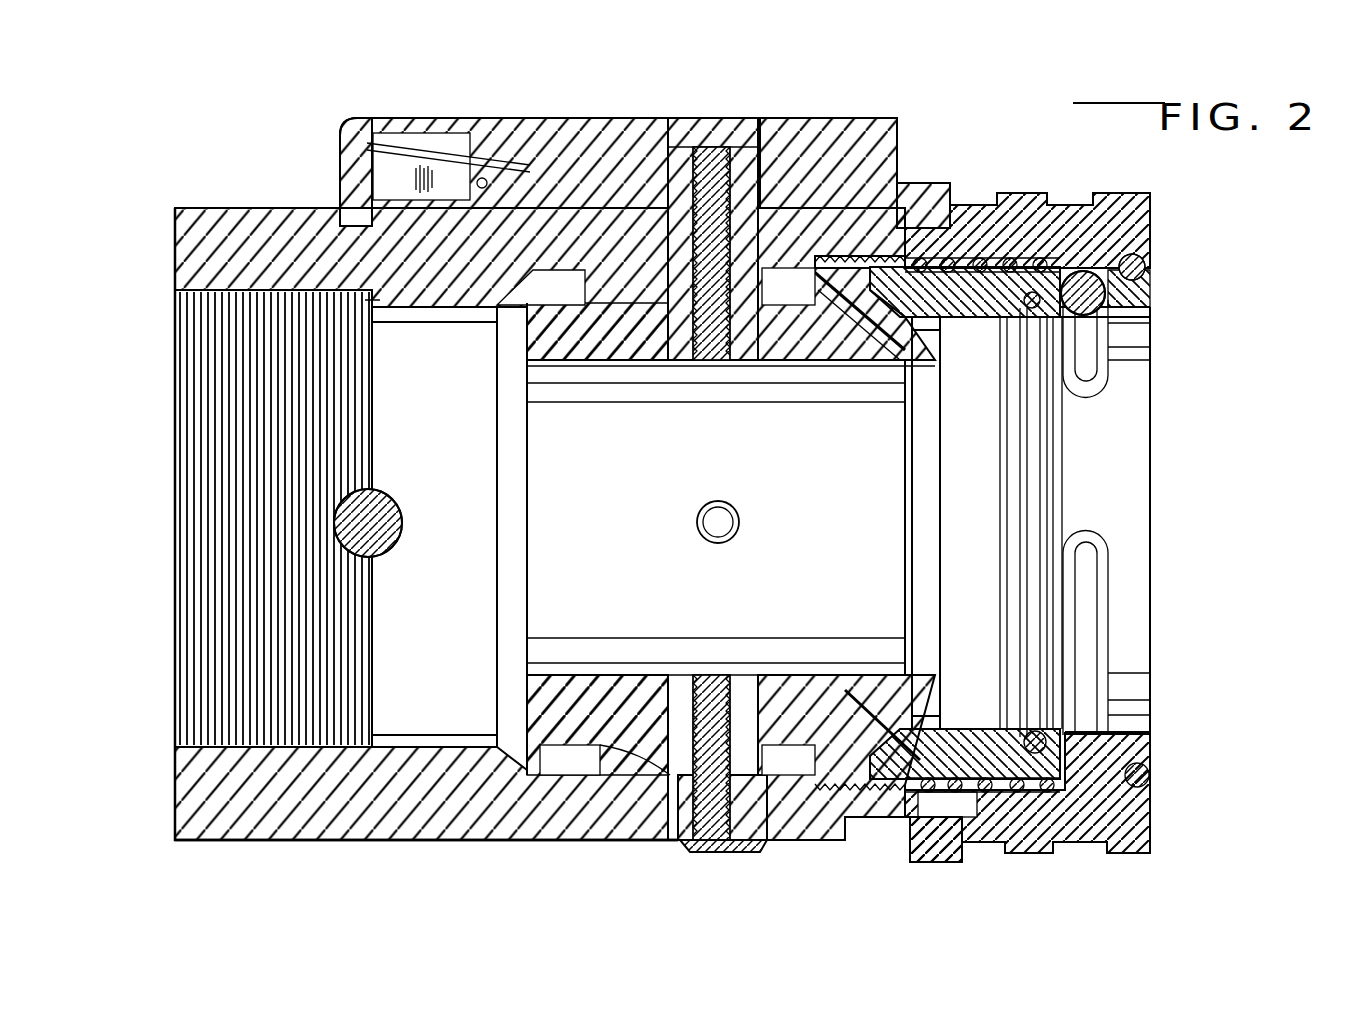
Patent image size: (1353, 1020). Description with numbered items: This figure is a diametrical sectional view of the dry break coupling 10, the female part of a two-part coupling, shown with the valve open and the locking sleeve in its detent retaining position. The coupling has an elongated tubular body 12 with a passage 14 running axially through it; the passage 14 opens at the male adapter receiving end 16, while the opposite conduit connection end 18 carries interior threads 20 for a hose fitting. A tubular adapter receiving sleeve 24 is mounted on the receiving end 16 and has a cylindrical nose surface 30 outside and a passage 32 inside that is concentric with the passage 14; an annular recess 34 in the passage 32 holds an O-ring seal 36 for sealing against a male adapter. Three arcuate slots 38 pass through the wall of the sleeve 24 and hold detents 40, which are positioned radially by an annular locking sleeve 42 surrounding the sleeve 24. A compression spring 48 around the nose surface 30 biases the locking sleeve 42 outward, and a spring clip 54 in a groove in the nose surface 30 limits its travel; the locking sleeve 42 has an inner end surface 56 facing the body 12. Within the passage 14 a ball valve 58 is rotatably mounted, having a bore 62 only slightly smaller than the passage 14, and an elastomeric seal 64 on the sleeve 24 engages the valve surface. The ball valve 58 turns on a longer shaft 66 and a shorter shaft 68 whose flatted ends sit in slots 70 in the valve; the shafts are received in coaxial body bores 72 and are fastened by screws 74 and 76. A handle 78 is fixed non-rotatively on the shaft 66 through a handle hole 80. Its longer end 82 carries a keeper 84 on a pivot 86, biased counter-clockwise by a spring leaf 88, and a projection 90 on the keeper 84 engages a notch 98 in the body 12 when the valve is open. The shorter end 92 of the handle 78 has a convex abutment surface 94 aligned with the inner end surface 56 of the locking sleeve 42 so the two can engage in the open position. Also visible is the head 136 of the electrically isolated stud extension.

The dry break coupling 10 is at (478, 858).
The tubular body 12 is at (330, 828).
The passage 14 is at (498, 348).
The male adapter receiving end 16 is at (902, 205).
The conduit connection end 18 is at (172, 815).
The interior threads 20 is at (175, 292).
The adapter receiving sleeve 24 is at (965, 320).
The nose surface 30 is at (1040, 252).
The passage 32 is at (962, 722).
The annular recess 34 is at (1085, 740).
The O-ring seal 36 is at (1035, 495).
The arcuate slots 38 is at (1095, 395).
The detents 40 is at (1095, 345).
The locking sleeve 42 is at (1025, 832).
The compression spring 48 is at (962, 262).
The spring clip 54 is at (1155, 265).
The inner end surface 56 is at (905, 845).
The ball valve 58 is at (840, 690).
The bore 62 is at (570, 680).
The elastomeric seal 64 is at (886, 338).
The longer shaft 66 is at (792, 160).
The shorter shaft 68 is at (605, 758).
The slots 70 is at (790, 360).
The body bores 72 is at (640, 283).
The screw 74 is at (722, 378).
The screw 76 is at (716, 680).
The handle 78 is at (590, 116).
The handle hole 80 is at (692, 152).
The longer end 82 is at (480, 118).
The keeper 84 is at (345, 168).
The pivot 86 is at (527, 160).
The spring leaf 88 is at (412, 140).
The projection 90 is at (358, 222).
The shorter end 92 is at (865, 118).
The abutment surface 94 is at (900, 140).
The notch 98 is at (372, 240).
The head 136 is at (405, 530).